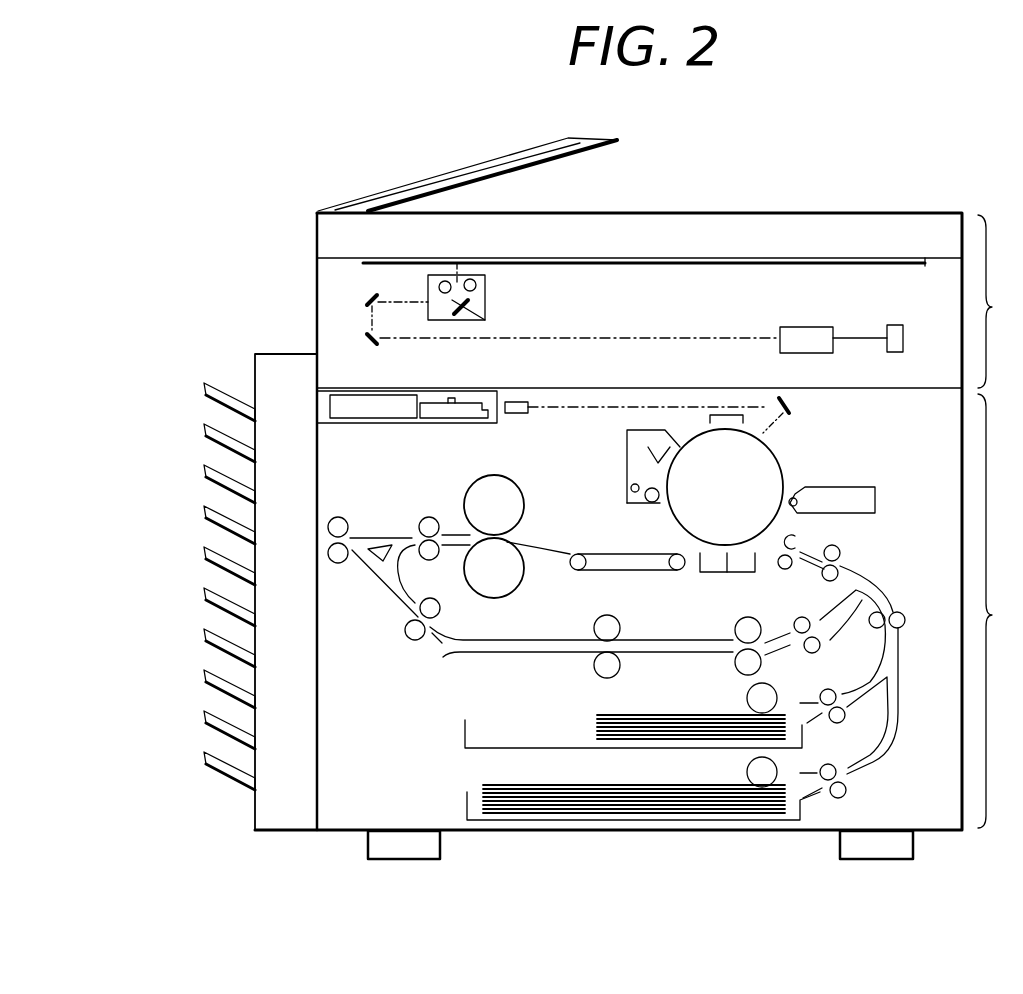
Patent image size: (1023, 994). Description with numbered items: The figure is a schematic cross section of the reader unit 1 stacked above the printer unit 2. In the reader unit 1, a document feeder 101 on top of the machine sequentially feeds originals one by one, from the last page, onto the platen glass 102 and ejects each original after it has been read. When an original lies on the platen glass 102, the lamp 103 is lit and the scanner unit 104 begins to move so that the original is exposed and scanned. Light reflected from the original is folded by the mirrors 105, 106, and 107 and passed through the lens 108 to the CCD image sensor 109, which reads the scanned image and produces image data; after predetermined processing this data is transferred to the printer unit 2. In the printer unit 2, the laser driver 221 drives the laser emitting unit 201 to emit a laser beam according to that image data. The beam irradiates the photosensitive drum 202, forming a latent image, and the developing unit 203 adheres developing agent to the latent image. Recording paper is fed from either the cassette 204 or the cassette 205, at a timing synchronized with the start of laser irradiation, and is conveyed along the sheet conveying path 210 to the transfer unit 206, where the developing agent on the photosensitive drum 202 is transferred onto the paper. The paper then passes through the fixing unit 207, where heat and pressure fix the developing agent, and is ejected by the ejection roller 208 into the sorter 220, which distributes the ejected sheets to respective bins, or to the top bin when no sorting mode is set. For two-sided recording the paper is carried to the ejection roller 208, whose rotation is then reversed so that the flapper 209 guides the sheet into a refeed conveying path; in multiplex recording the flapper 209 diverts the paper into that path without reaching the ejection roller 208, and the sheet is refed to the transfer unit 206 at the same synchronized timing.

The reader unit 1 is at (1012, 322).
The printer unit 2 is at (1018, 629).
The document feeder 101 is at (456, 176).
The platen glass 102 is at (876, 260).
The lamp 103 is at (474, 282).
The scanner unit 104 is at (488, 300).
The mirror 105 is at (487, 320).
The mirror 106 is at (364, 298).
The mirror 107 is at (365, 344).
The lens 108 is at (806, 327).
The CCD image sensor 109 is at (904, 330).
The laser emitting unit 201 is at (436, 392).
The photosensitive drum 202 is at (696, 432).
The developing unit 203 is at (852, 512).
The cassette 204 is at (803, 740).
The cassette 205 is at (794, 822).
The transfer unit 206 is at (716, 575).
The fixing unit 207 is at (515, 562).
The ejection roller 208 is at (327, 553).
The flapper 209 is at (375, 553).
The sheet conveying path 210 is at (695, 652).
The sorter 220 is at (262, 812).
The laser driver 221 is at (378, 410).